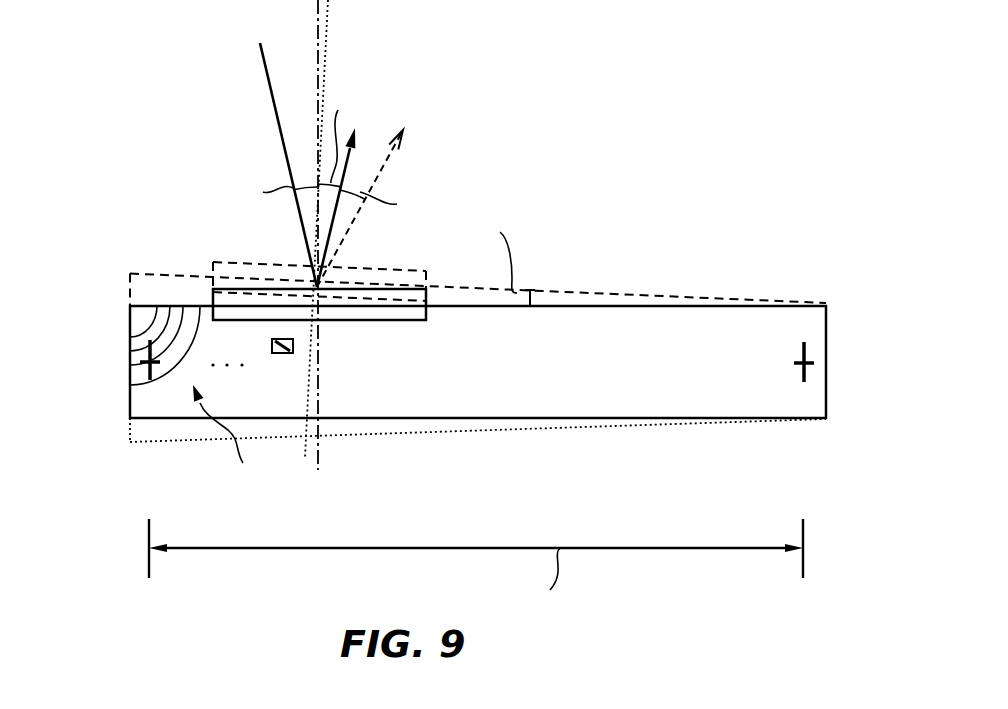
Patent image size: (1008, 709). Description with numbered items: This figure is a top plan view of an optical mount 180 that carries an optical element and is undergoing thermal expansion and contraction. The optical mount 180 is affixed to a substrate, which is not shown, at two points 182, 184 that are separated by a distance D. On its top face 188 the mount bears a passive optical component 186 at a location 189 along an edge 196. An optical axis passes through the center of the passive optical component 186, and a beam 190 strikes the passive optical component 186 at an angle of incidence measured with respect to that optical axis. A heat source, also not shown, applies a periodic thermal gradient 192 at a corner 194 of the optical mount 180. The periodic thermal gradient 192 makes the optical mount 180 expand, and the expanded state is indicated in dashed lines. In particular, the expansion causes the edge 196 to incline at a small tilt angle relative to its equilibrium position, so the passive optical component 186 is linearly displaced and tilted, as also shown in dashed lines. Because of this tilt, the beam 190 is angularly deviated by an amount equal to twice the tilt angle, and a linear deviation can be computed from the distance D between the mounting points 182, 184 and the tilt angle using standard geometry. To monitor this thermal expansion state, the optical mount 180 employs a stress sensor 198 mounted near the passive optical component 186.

The optical mount 180 is at (136, 99).
The mounting point 182 is at (140, 350).
The mounting point 184 is at (810, 352).
The passive optical component 186 is at (426, 319).
The top face 188 is at (478, 362).
The location 189 is at (184, 288).
The beam 190 is at (263, 72).
The periodic thermal gradient 192 is at (226, 444).
The corner 194 is at (128, 304).
The edge 196 is at (597, 297).
The stress sensor 198 is at (293, 346).